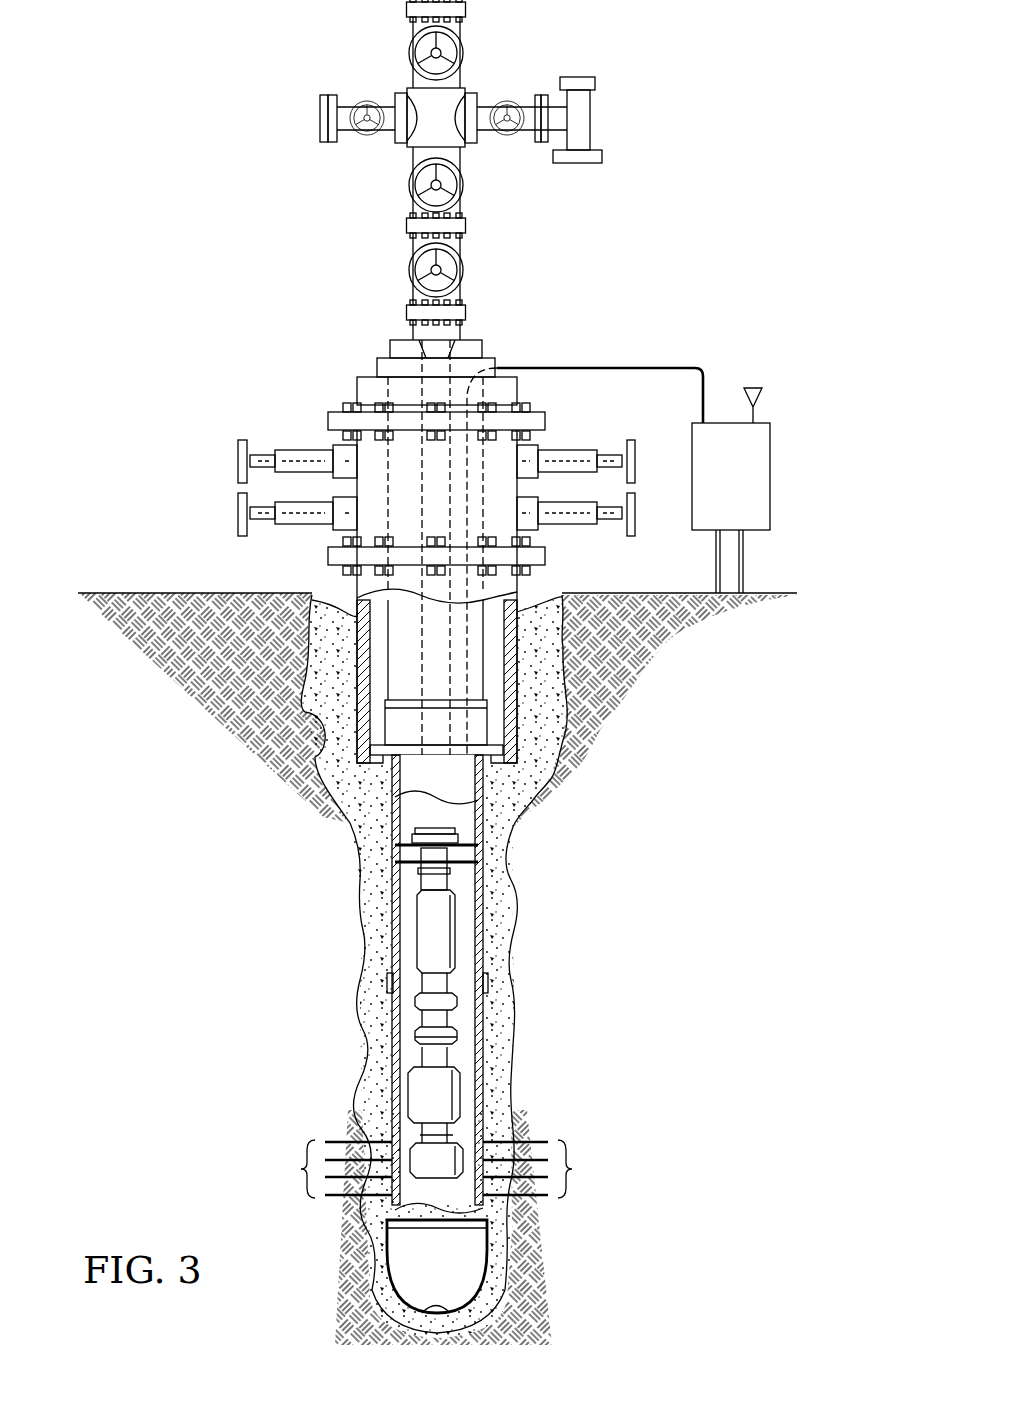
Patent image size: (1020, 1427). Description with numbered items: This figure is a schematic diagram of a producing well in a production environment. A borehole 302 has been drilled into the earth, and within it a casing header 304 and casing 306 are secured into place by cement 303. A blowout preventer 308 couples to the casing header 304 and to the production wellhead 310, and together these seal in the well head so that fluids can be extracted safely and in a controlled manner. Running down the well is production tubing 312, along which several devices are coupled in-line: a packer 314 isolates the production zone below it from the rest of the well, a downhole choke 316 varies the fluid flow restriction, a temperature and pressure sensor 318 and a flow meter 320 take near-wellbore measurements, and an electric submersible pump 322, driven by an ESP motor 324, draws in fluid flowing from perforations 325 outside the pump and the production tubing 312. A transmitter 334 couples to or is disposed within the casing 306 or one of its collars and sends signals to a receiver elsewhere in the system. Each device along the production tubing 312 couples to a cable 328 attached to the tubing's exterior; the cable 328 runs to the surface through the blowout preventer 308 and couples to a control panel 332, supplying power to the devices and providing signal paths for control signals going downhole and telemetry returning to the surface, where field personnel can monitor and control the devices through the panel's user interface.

The borehole 302 is at (305, 713).
The cement 303 is at (368, 921).
The casing header 304 is at (570, 710).
The casing 306 is at (484, 883).
The blowout preventer 308 is at (341, 400).
The production wellhead 310 is at (397, 88).
The production tubing 312 is at (402, 824).
The packer 314 is at (406, 882).
The downhole choke 316 is at (425, 943).
The temperature and pressure sensor 318 is at (413, 1000).
The flow meter 320 is at (413, 1035).
The electric submersible pump 322 is at (413, 1083).
The ESP motor 324 is at (446, 1166).
The perforations 325 is at (437, 1169).
The cable 328 is at (597, 367).
The control panel 332 is at (751, 495).
The transmitter 334 is at (489, 985).